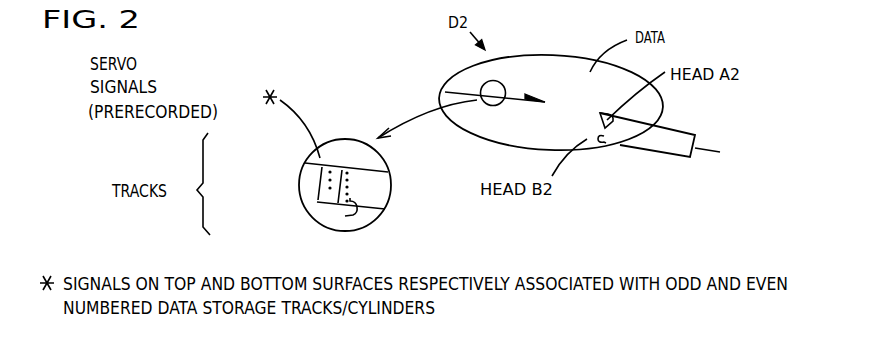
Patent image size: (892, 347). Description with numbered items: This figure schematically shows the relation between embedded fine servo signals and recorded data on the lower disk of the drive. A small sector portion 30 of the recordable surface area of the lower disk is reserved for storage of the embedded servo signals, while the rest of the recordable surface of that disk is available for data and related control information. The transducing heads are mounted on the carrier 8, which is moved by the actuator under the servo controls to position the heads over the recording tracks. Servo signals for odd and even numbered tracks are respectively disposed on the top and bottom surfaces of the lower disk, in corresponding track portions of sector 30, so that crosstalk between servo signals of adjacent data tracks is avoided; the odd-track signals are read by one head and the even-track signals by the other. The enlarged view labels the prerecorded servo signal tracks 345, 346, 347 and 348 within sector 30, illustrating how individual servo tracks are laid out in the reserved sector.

The sector portion 30 is at (545, 102).
The servo track 345 is at (310, 164).
The servo track 346 is at (328, 189).
The servo track 347 is at (320, 202).
The servo track / head position 348 is at (345, 216).
The carrier 8 is at (720, 152).